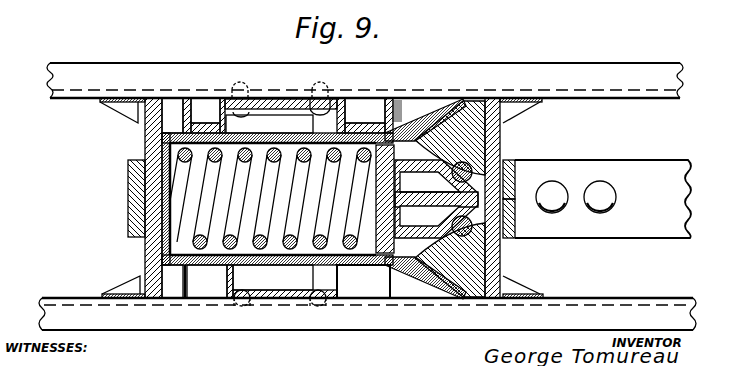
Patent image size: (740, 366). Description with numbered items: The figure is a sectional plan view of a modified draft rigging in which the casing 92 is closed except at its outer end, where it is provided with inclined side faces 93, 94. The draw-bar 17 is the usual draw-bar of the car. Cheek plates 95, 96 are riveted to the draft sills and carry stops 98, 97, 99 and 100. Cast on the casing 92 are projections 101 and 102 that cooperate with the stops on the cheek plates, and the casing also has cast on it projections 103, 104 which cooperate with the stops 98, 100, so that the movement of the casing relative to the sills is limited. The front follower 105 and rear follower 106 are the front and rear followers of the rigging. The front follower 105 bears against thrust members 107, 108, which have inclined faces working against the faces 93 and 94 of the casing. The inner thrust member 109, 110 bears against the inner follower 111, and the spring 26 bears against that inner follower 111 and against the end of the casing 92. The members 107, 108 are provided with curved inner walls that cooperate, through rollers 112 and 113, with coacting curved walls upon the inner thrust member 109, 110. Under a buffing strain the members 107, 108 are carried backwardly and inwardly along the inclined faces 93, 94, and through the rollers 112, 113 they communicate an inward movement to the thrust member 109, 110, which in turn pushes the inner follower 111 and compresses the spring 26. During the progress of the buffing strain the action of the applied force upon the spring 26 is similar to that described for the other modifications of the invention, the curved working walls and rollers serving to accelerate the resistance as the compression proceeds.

The draw-bar 17 is at (655, 170).
The spring 26 is at (240, 213).
The casing 92 is at (145, 137).
The inclined side face 93 is at (447, 110).
The inclined side face 94 is at (437, 290).
The cheek plate 95 is at (283, 100).
The cheek plate 96 is at (297, 293).
The stop 97 is at (203, 113).
The stop 98 is at (372, 110).
The stop 99 is at (210, 281).
The stop 100 is at (363, 281).
The projection 101 is at (265, 122).
The projection 102 is at (280, 270).
The projection 103 is at (417, 110).
The projection 104 is at (408, 288).
The front follower 105 is at (502, 148).
The rear follower 106 is at (144, 148).
The thrust member 107 is at (504, 133).
The thrust member 108 is at (503, 260).
The inner thrust member 109 is at (417, 162).
The inner thrust member 110 is at (417, 236).
The inner follower 111 is at (372, 198).
The roller 112 is at (517, 170).
The roller 113 is at (517, 223).